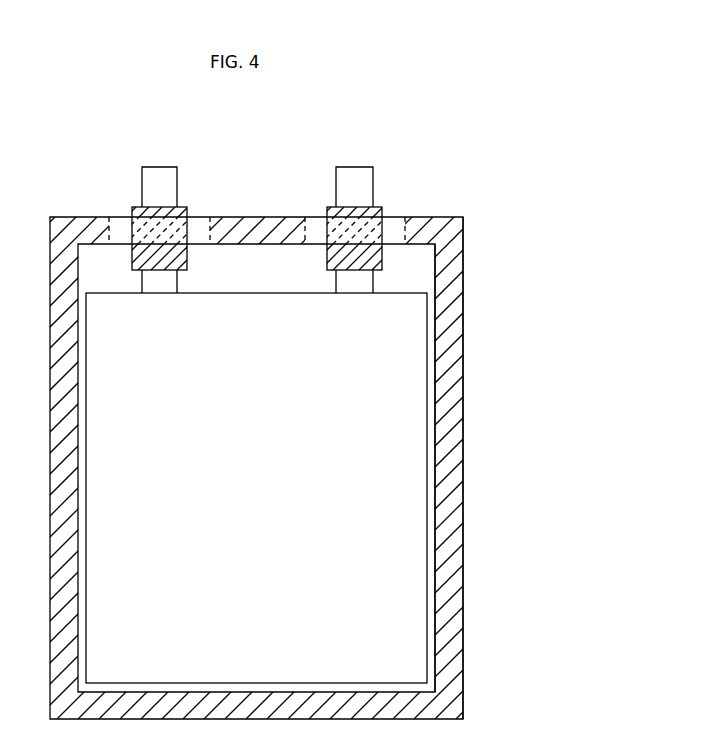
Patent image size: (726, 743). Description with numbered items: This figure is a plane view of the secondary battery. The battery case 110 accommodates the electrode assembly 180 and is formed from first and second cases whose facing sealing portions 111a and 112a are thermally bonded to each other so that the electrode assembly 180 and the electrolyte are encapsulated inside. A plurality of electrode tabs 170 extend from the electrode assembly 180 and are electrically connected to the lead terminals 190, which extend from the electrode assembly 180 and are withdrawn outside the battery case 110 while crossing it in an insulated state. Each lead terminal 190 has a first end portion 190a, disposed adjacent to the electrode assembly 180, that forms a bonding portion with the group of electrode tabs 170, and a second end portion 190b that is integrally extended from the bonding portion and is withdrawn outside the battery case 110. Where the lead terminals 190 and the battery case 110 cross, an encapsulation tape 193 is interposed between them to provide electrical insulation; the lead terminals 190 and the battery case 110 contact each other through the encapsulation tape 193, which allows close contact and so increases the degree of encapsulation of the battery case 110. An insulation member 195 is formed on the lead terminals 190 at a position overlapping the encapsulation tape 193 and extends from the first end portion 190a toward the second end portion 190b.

The battery case 110 is at (476, 302).
The sealing portion of first case 111a is at (518, 468).
The sealing portion of second case 112a is at (453, 256).
The electrode tabs 170 is at (178, 280).
The electrode assembly 180 is at (275, 467).
The lead terminals 190 is at (159, 178).
The first end portion 190a is at (332, 279).
The second end portion 190b is at (352, 178).
The encapsulation tape 193 is at (197, 226).
The insulation member 195 is at (178, 208).